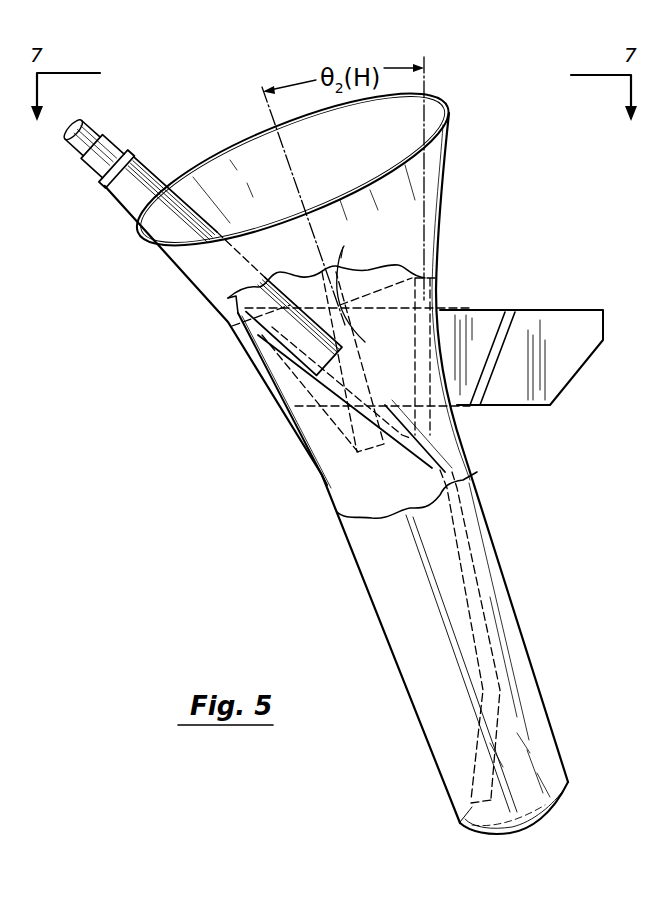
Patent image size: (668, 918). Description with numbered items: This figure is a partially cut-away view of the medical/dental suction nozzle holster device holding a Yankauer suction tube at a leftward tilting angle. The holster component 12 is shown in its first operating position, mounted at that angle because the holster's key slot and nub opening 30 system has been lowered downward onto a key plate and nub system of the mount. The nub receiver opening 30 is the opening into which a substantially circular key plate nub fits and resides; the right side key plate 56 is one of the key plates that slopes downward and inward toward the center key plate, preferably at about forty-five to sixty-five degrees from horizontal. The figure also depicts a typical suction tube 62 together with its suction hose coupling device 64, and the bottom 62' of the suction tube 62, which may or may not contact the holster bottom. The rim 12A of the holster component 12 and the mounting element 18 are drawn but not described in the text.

The holster component 12 is at (359, 567).
The funnel rim 12A is at (449, 113).
The suction tube 62 is at (332, 414).
The bottom of the suction tube 62' is at (429, 812).
The suction hose coupling device 64 is at (104, 136).
The mounting bracket 18 is at (557, 373).
The nub receiver opening 30 is at (365, 340).
The right side key plate 56 is at (370, 237).